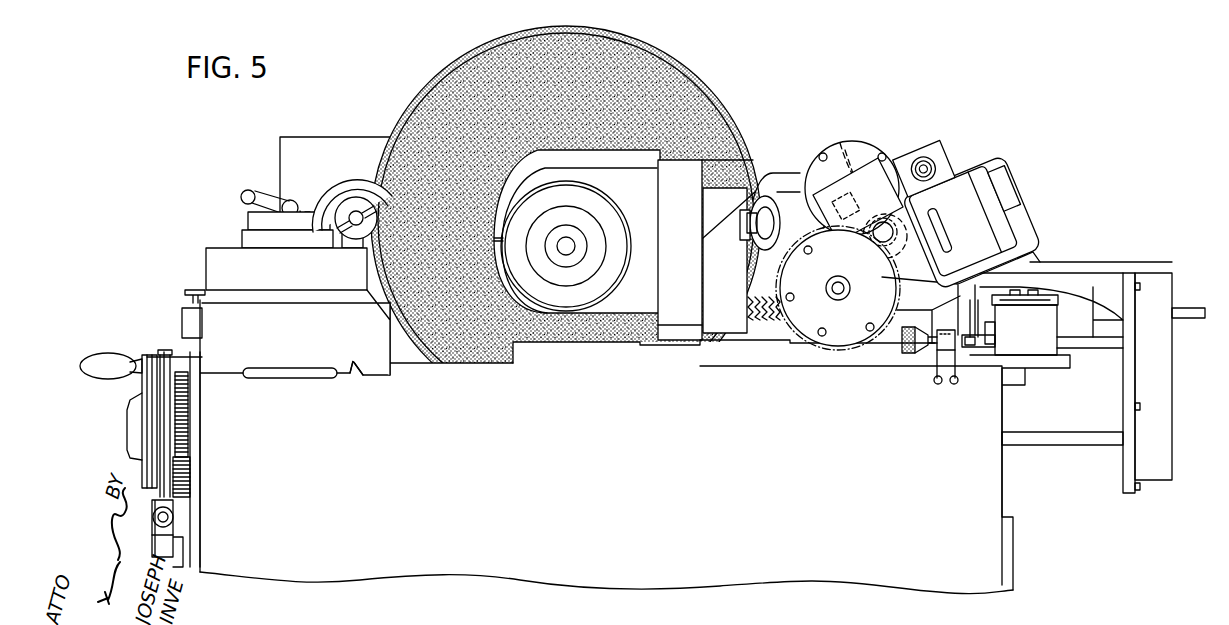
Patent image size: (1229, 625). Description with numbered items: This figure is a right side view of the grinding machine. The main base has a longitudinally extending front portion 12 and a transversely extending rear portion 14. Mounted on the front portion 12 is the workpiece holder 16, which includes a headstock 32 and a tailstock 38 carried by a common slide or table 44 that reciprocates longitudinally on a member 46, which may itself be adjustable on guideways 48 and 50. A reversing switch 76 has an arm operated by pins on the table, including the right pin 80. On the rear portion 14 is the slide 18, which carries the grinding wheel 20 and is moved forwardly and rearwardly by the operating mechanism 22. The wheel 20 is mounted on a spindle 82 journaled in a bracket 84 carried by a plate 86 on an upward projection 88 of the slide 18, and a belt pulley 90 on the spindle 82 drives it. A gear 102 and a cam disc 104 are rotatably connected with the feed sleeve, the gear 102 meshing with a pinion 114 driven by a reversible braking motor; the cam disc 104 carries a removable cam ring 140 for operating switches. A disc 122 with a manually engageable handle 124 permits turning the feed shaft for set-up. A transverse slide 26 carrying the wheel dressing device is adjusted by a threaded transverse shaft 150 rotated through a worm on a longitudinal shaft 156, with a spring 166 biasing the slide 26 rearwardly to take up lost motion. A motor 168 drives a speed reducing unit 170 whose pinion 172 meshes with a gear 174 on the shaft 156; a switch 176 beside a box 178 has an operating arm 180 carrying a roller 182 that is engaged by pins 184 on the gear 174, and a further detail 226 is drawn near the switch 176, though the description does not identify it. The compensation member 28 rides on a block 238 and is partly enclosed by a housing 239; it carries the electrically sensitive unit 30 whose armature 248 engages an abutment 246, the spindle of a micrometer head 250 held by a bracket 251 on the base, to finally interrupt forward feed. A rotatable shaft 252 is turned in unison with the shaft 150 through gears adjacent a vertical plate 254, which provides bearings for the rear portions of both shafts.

The front portion 12 is at (295, 436).
The rear portion 14 is at (635, 474).
The workpiece holder 16 is at (316, 190).
The slide 18 is at (705, 362).
The grinding wheel 20 is at (470, 70).
The operating mechanism 22 is at (180, 350).
The slide 26 is at (925, 322).
The compensation member 28 is at (1078, 300).
The electrically sensitive unit 30 is at (1035, 345).
The headstock 32 is at (337, 177).
The tailstock 38 is at (358, 197).
The slide or table 44 is at (215, 268).
The member 46 is at (210, 315).
The guideway 48 is at (352, 372).
The guideway 50 is at (227, 372).
The switch 76 is at (190, 323).
The pin 80 is at (185, 291).
The spindle 82 is at (560, 250).
The bracket 84 is at (515, 165).
The plate 86 is at (683, 172).
The upward projection 88 is at (729, 260).
The belt pulley 90 is at (535, 258).
The gear 102 is at (183, 421).
The cam disc 104 is at (190, 357).
The pinion 114 is at (185, 484).
The disc 122 is at (147, 381).
The handle 124 is at (100, 355).
The cam ring 140 is at (166, 352).
The transverse shaft 150 is at (1190, 308).
The longitudinal shaft 156 is at (836, 287).
The spring 166 is at (762, 320).
The motor 168 is at (975, 180).
The speed reducing unit 170 is at (920, 275).
The pinion 172 is at (890, 243).
The gear 174 is at (812, 226).
The switch 176 is at (852, 176).
The box 178 is at (883, 153).
The operating arm 180 is at (858, 200).
The roller 182 is at (887, 217).
The pins 184 is at (794, 300).
The slot 226 is at (858, 142).
The block 238 is at (1085, 343).
The housing 239 is at (1055, 262).
The abutment 246 is at (955, 380).
The armature 248 is at (975, 347).
The micrometer head 250 is at (932, 347).
The bracket 251 is at (935, 386).
The rotatable shaft 252 is at (1125, 468).
The vertical plate 254 is at (1088, 438).